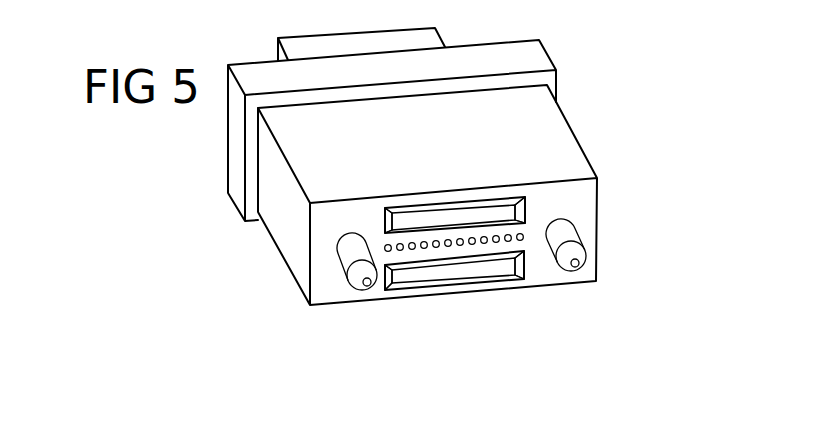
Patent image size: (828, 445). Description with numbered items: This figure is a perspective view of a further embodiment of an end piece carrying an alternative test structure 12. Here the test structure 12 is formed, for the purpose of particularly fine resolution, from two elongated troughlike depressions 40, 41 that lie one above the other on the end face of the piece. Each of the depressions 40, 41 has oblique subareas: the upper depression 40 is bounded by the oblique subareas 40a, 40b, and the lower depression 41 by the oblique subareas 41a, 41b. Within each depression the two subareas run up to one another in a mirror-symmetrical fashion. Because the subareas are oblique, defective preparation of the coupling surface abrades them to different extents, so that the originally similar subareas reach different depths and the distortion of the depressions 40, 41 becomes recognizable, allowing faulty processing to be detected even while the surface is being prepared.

The test structure 12 is at (447, 180).
The elongated troughlike depression 40 is at (497, 203).
The oblique subarea 40a is at (387, 203).
The oblique subarea 40b is at (522, 207).
The elongated troughlike depression 41 is at (475, 280).
The oblique subarea 41a is at (385, 291).
The oblique subarea 41b is at (520, 277).